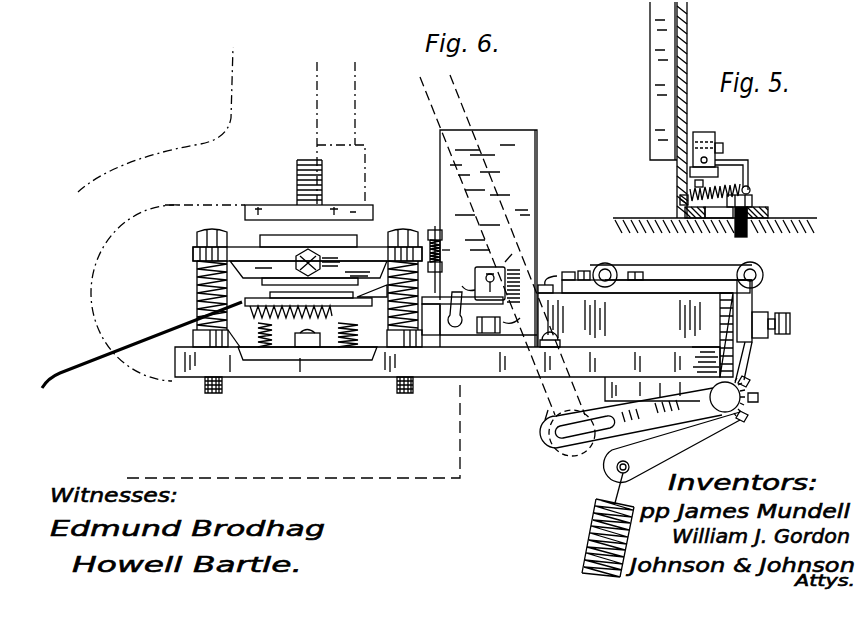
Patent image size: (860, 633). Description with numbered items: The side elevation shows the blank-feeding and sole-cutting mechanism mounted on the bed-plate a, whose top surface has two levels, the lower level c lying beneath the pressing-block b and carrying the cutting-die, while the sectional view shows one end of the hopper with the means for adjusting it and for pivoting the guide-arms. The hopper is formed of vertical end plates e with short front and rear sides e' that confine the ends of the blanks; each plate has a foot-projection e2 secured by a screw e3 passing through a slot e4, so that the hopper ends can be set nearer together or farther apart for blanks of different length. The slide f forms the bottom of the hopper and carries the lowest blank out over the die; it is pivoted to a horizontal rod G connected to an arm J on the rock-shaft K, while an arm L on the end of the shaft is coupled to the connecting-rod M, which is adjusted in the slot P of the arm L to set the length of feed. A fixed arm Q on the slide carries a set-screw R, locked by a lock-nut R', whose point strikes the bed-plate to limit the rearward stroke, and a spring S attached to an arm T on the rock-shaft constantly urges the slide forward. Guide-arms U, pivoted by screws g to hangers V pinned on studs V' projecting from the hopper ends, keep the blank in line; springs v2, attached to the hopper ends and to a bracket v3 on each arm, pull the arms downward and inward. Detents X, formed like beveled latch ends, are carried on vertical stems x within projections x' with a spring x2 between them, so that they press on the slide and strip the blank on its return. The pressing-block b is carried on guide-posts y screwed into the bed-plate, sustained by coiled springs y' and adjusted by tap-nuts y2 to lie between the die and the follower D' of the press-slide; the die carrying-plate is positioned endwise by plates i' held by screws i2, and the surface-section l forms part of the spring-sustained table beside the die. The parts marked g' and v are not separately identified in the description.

In FIG. 6, the follower of the press-slide D' is at (309, 190).
In FIG. 6, the surface-section l is at (307, 254).
In FIG. 6, the pressing-block b is at (310, 289).
In FIG. 6, the guide-posts y is at (307, 228).
In FIG. 6, the tap-nuts y2 is at (298, 244).
In FIG. 6, the springs y' is at (300, 304).
In FIG. 6, the lower level of the bed-plate c is at (235, 339).
In FIG. 6, the toothed bar g' is at (316, 301).
In FIG. 6, the screws i2 is at (308, 335).
In FIG. 6, the plates i' is at (307, 353).
In FIG. 6, the bed-plate a is at (462, 340).
In FIG. 6, the vertical stem x is at (433, 249).
In FIG. 6, the projections x' is at (441, 251).
In FIG. 6, the spring x2 is at (453, 246).
In FIG. 6, the detents X is at (462, 316).
In FIG. 6, the hangers V is at (497, 276).
In FIG. 5, the hangers V is at (704, 142).
In FIG. 6, the studs V' is at (511, 251).
In FIG. 5, the studs V' is at (726, 144).
In FIG. 6, the horizontal arms U is at (465, 278).
In FIG. 6, the springs v2 is at (463, 309).
In FIG. 5, the springs v2 is at (715, 188).
In FIG. 6, the vertical end plates e is at (488, 238).
In FIG. 5, the vertical end plates e is at (674, 110).
In FIG. 5, the front and rear sides e' is at (661, 80).
In FIG. 6, the foot-projections e2 is at (488, 327).
In FIG. 5, the foot-projections e2 is at (762, 206).
In FIG. 6, the screws e3 is at (488, 325).
In FIG. 5, the screws e3 is at (752, 195).
In FIG. 5, the slots e4 is at (716, 221).
In FIG. 6, the screws g is at (515, 314).
In FIG. 5, the screws g is at (691, 188).
In FIG. 6, the slide f is at (547, 282).
In FIG. 6, the horizontal rod G is at (662, 269).
In FIG. 6, the fixed arm Q is at (719, 335).
In FIG. 6, the lock-nut R' is at (753, 311).
In FIG. 6, the set-screw R is at (787, 323).
In FIG. 6, the arm J is at (740, 362).
In FIG. 6, the rock-shaft K is at (734, 399).
In FIG. 6, the arm L is at (631, 418).
In FIG. 6, the slot P is at (582, 439).
In FIG. 6, the rod M is at (552, 403).
In FIG. 6, the arm T is at (672, 447).
In FIG. 6, the spring S is at (605, 525).
In FIG. 5, the block v is at (690, 173).
In FIG. 5, the bracket v3 is at (752, 155).